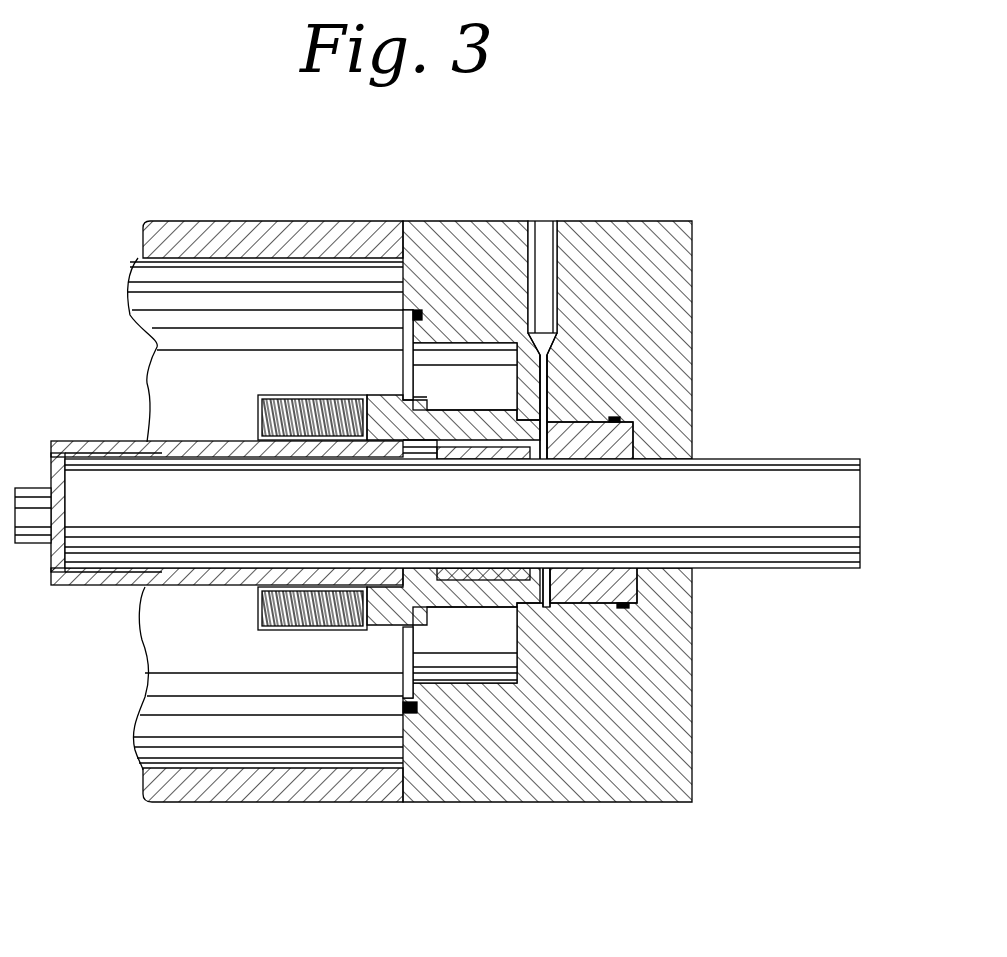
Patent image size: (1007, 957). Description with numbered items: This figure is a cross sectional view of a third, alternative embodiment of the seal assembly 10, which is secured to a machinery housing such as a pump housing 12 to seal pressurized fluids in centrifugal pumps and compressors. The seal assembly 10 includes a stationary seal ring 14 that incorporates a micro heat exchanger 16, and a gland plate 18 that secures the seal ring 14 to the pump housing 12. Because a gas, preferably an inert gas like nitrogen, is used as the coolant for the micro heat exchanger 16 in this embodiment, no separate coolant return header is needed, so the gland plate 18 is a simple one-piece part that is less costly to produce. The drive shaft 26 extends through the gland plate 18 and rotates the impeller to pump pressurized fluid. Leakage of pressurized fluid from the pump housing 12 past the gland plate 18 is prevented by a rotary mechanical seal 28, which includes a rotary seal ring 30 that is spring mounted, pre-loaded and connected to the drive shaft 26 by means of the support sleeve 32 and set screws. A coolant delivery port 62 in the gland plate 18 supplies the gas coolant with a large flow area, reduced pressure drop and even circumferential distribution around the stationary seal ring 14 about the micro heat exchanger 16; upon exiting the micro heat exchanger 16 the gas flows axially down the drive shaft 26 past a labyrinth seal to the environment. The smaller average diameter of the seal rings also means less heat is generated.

The seal assembly 10 is at (716, 250).
The pump housing 12 is at (258, 226).
The stationary seal ring 14 is at (614, 420).
The micro heat exchanger 16 is at (548, 420).
The gland plate 18 is at (615, 228).
The drive shaft 26 is at (745, 479).
The rotary mechanical seal 28 is at (200, 662).
The rotary seal ring 30 is at (403, 387).
The support sleeve 32 is at (190, 442).
The coolant delivery port 62 is at (545, 236).